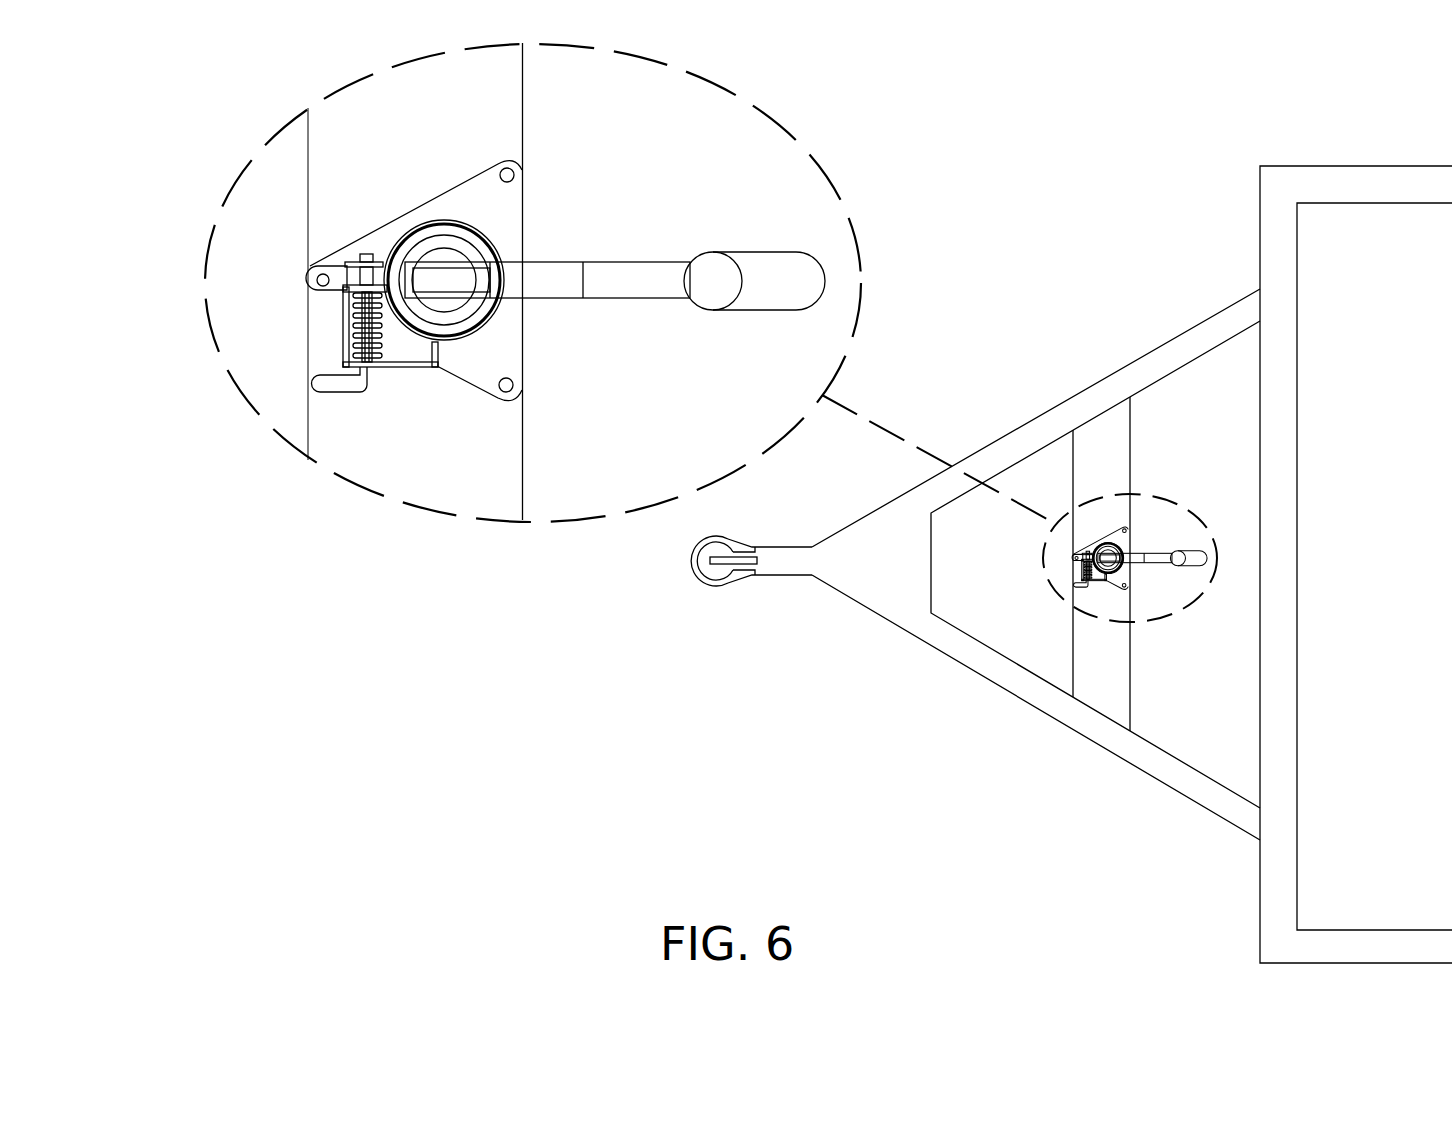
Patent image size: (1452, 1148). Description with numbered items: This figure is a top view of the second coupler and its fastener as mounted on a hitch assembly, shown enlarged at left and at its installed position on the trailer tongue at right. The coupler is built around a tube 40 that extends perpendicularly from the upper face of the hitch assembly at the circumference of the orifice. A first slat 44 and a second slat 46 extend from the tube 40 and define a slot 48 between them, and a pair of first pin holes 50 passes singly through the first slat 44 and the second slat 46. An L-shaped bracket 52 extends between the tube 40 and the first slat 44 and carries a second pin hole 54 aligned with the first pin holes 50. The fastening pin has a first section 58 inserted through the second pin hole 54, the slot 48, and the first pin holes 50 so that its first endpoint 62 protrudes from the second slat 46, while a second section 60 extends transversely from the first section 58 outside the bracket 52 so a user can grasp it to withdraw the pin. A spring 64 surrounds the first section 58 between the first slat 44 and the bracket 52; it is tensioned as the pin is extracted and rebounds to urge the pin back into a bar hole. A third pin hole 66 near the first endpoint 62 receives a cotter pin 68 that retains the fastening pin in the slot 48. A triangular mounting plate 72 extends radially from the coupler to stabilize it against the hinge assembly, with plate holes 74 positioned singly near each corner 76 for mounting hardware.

The tube 40 is at (433, 222).
The first slat 44 is at (355, 293).
The second slat 46 is at (347, 270).
The slot 48 is at (345, 287).
The first pin holes 50 is at (372, 287).
The bracket 52 is at (427, 368).
The second pin hole 54 is at (370, 370).
The first section 58 is at (378, 345).
The second section 60 is at (333, 392).
The first endpoint 62 is at (370, 256).
The spring 64 is at (357, 331).
The third pin hole 66 is at (367, 256).
The cotter pin 68 is at (363, 255).
The mounting plate 72 is at (477, 172).
The plate holes 74 is at (508, 170).
The corner 76 is at (513, 398).